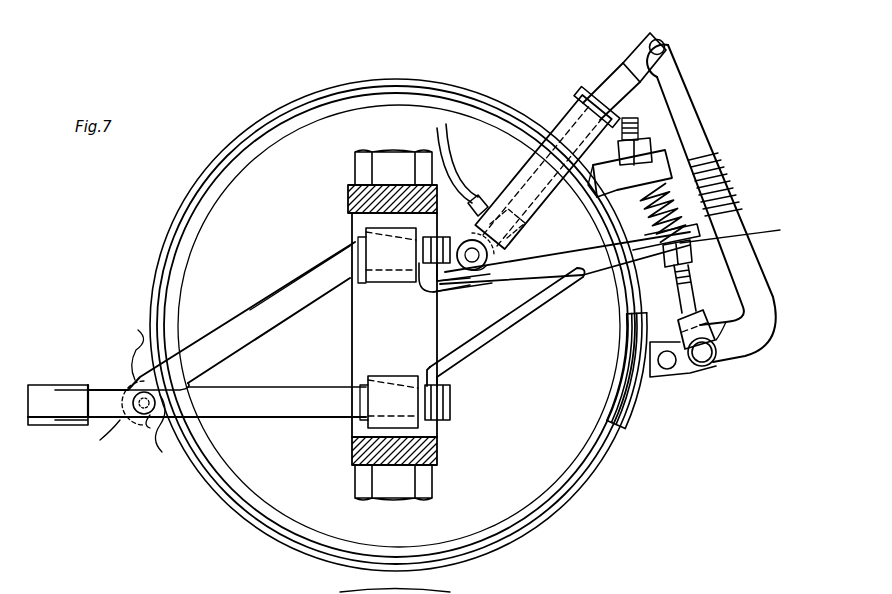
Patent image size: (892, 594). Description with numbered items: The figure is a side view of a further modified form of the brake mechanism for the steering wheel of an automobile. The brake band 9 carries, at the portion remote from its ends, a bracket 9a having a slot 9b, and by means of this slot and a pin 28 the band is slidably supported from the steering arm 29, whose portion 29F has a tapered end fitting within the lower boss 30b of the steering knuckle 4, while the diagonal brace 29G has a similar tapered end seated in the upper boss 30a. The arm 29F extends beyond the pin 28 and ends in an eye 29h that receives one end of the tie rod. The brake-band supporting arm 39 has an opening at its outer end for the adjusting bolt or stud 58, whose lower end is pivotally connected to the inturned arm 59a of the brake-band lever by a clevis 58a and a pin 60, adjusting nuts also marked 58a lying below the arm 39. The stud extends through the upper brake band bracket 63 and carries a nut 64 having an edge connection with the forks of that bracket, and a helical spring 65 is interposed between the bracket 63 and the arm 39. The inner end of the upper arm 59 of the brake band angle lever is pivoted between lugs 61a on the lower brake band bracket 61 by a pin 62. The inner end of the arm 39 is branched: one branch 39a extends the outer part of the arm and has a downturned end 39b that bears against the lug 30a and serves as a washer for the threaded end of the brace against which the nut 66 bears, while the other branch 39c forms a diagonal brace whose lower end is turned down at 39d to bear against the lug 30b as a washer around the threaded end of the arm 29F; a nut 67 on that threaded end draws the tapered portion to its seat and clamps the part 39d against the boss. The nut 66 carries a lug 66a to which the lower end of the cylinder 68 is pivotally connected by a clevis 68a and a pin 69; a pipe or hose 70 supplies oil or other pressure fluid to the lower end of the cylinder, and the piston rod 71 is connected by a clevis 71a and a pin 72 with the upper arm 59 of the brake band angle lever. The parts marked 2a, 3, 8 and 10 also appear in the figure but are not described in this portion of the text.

The hatched axle block 2a is at (348, 200).
The axle nut 3 is at (395, 500).
The steering knuckle 4 is at (351, 330).
The wheel inner rim 8 is at (348, 109).
The brake band 9 is at (443, 90).
The bracket 9a is at (168, 448).
The slot 9b is at (115, 393).
The tire 10 is at (393, 79).
The pin 28 is at (138, 395).
The fork arm 29 is at (138, 430).
The steering arm 29F is at (283, 390).
The diagonal brace 29G is at (289, 293).
The eye 29h is at (50, 385).
The upper boss 30a is at (400, 283).
The boss 30b is at (404, 376).
The brake-band supporting arm 39 is at (646, 266).
The branch 39a is at (565, 258).
The downturned end 39b is at (465, 213).
The brake lever diagonal arm 39c is at (512, 330).
The turned-down lower end 39d is at (440, 430).
The adjusting bolt 58 is at (694, 287).
The clevis 58a is at (742, 386).
The upper arm of brake band angle lever 59 is at (702, 129).
The inturned arm 59a is at (745, 350).
The pin 60 is at (703, 368).
The lower brake band bracket 61 is at (635, 412).
The lugs 61a is at (655, 378).
The pin 62 is at (672, 340).
The upper brake band bracket 63 is at (618, 192).
The nut 64 is at (644, 126).
The spring 65 is at (644, 228).
The nut 66 is at (455, 282).
The lug 66a is at (495, 285).
The nut 67 is at (451, 401).
The cylinder 68 is at (520, 178).
The clevis 68a is at (490, 252).
The pin 69 is at (488, 262).
The pipe or hose 70 is at (462, 165).
The piston rod 71 is at (612, 80).
The clevis 71a is at (642, 50).
The pin 72 is at (667, 45).